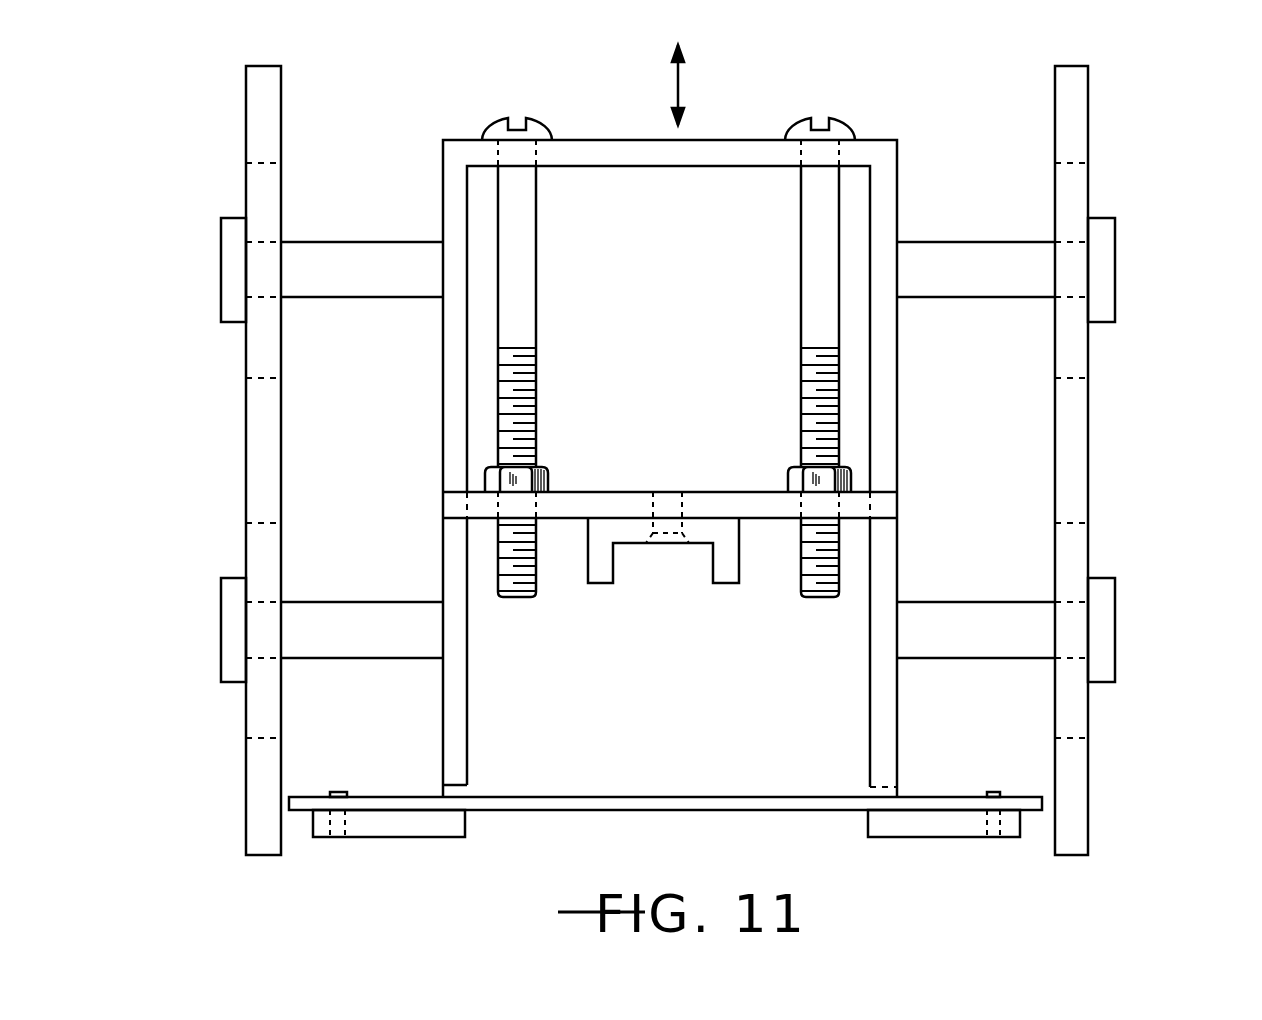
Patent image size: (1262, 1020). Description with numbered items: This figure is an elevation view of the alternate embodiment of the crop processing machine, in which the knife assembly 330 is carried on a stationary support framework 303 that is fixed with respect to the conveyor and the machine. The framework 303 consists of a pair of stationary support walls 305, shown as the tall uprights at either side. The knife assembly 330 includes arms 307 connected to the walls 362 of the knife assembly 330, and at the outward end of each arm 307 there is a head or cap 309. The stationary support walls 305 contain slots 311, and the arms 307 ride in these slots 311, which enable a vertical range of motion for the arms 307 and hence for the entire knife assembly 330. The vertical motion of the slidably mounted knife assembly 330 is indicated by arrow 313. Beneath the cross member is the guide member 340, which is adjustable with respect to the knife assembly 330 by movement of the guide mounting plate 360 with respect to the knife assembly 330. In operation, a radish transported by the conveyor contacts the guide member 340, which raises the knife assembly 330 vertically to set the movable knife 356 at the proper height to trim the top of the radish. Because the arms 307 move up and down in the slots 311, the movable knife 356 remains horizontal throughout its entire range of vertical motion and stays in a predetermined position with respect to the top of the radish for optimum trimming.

The stationary support framework 303 is at (1108, 55).
The stationary support wall 305 is at (1090, 107).
The arm 307 is at (390, 242).
The cap 309 is at (221, 293).
The slot 311 is at (165, 163).
The arrow 313 is at (678, 86).
The knife assembly 330 is at (708, 125).
The guide member 340 is at (637, 545).
The movable knife 356 is at (655, 810).
The guide mounting plate 360 is at (740, 492).
The wall of the knife assembly 362 is at (440, 418).